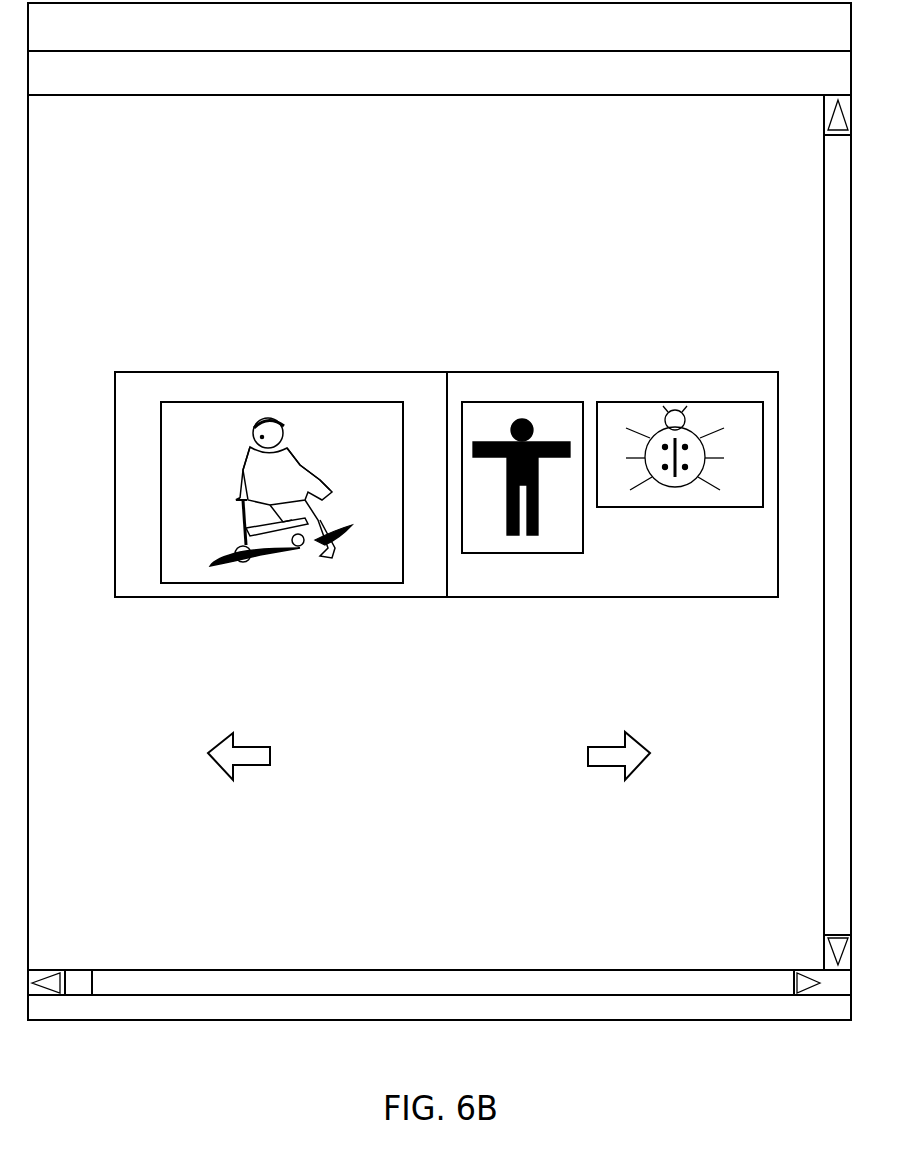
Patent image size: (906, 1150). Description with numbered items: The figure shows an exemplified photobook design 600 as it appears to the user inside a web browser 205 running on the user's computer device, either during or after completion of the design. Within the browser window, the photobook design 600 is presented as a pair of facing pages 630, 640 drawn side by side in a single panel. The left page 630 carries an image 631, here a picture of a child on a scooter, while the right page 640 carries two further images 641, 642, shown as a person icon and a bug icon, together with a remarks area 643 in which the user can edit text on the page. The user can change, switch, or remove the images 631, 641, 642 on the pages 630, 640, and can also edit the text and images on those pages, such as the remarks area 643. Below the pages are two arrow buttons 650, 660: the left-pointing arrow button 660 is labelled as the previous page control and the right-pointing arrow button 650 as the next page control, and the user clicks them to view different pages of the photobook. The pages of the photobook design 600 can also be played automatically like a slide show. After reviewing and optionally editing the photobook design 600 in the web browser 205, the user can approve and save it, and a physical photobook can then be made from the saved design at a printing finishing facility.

The web browser 205 is at (230, 44).
The photobook design 600 is at (156, 364).
The page 630 is at (327, 386).
The image 631 is at (349, 565).
The page 640 is at (668, 387).
The image 641 is at (553, 538).
The image 642 is at (633, 418).
The remarks link 643 is at (716, 580).
The arrow button 650 is at (650, 735).
The arrow button 660 is at (212, 740).